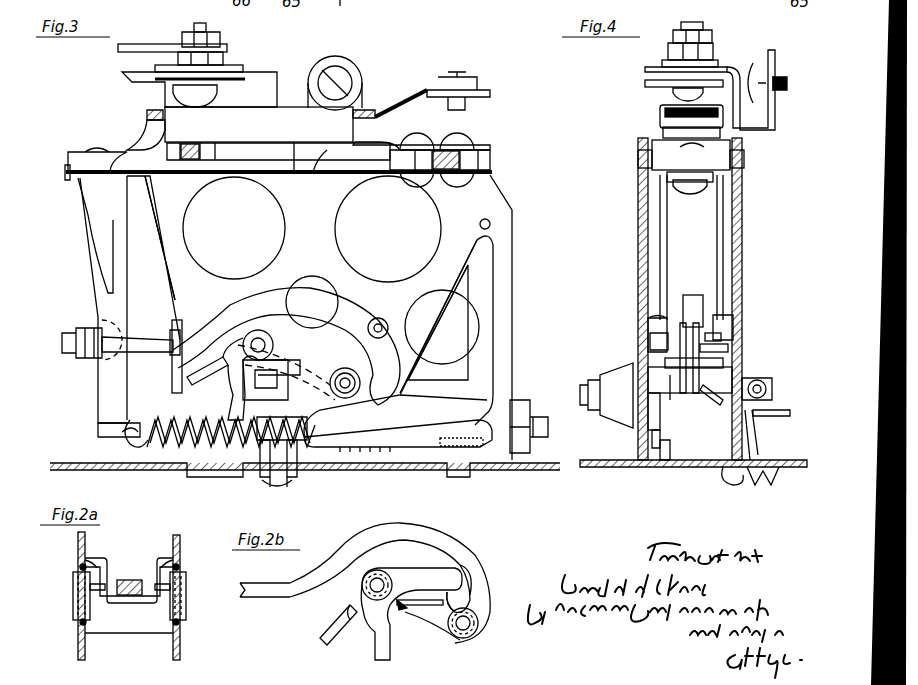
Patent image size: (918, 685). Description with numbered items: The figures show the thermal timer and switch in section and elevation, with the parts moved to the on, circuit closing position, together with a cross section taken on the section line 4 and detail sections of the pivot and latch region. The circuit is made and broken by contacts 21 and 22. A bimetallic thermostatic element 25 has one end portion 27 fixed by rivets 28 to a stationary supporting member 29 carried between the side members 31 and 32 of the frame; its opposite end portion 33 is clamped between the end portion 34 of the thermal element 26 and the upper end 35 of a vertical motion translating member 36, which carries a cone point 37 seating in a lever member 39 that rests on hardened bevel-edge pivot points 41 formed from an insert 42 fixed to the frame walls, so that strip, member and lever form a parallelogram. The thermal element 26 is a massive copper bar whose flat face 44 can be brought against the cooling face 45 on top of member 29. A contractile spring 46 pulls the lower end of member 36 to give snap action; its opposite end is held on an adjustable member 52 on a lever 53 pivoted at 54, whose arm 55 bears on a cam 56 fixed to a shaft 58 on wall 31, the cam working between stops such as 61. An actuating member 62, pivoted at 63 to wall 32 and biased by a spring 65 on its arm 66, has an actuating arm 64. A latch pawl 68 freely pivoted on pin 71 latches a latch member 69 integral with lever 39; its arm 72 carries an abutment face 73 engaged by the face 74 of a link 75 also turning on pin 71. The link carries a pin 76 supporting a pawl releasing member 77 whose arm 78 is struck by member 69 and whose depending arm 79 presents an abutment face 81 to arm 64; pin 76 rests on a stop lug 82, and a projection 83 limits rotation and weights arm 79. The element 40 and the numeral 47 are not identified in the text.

In FIG. 3, the section line 4- 4 is at (500, 140).
In FIG. 3, the make-and-break contact 21 is at (175, 100).
In FIG. 4, the make-and-break contact 21 is at (678, 94).
In FIG. 3, the make-and-break contact 22 is at (180, 100).
In FIG. 4, the make-and-break contact 22 is at (678, 97).
In FIG. 3, the thermostatic element 25 is at (232, 178).
In FIG. 3, the thermal element 26 is at (148, 130).
In FIG. 4, the thermal element 26 is at (662, 126).
In FIG. 3, the end portion of thermostatic strip 27 is at (492, 163).
In FIG. 4, the end portion of thermostatic strip 27 is at (675, 178).
In FIG. 4, the rivets 28 is at (700, 188).
In FIG. 3, the stationary supporting member 29 is at (490, 152).
In FIG. 4, the stationary supporting member 29 is at (716, 159).
In FIG. 4, the side member of frame 31 is at (638, 209).
In FIG. 2A, the side member of frame 31 is at (80, 635).
In FIG. 3, the side member of frame 32 is at (488, 200).
In FIG. 2A, the side member of frame 32 is at (178, 558).
In FIG. 3, the end portion of thermostatic strip 33 is at (75, 180).
In FIG. 3, the end portion of thermal element 34 is at (70, 154).
In FIG. 3, the upper end of motion translating member 35 is at (80, 188).
In FIG. 3, the vertical motion translating member 36 is at (90, 250).
In FIG. 3, the cone point 37 is at (95, 375).
In FIG. 3, the lever member 39 is at (143, 355).
In FIG. 2B, the lever member 39 is at (270, 585).
In FIG. 3, the terminal block 40 is at (327, 99).
In FIG. 4, the terminal block 40 is at (662, 113).
In FIG. 3, the stationary pivot points 41 is at (172, 340).
In FIG. 2A, the stationary pivot points 41 is at (90, 594).
In FIG. 3, the insert 42 is at (172, 375).
In FIG. 4, the insert 42 is at (662, 325).
In FIG. 2A, the insert 42 is at (78, 560).
In FIG. 3, the flat face of thermal element 44 is at (294, 143).
In FIG. 3, the flat face of supporting member 45 is at (327, 150).
In FIG. 3, the contractile spring 46 is at (175, 450).
In FIG. 3, the spring anchor 47 is at (112, 437).
In FIG. 3, the adjustable member 52 is at (528, 405).
In FIG. 3, the lever 53 is at (500, 330).
In FIG. 3, the pivot 54 is at (492, 224).
In FIG. 3, the lever arm 55 is at (330, 445).
In FIG. 4, the lever arm 55 is at (652, 462).
In FIG. 4, the adjustable cam 56 is at (648, 420).
In FIG. 4, the shaft 58 is at (590, 390).
In FIG. 4, the stop 61 is at (658, 340).
In FIG. 4, the actuating member 62 is at (765, 410).
In FIG. 4, the pivot 63 is at (770, 374).
In FIG. 3, the actuating arm 64 is at (268, 465).
In FIG. 4, the contractile spring 65 is at (757, 480).
In FIG. 3, the arm 66 is at (292, 480).
In FIG. 4, the arm 66 is at (742, 432).
In FIG. 3, the latch pawl 68 is at (380, 318).
In FIG. 4, the latch pawl 68 is at (722, 322).
In FIG. 2B, the latch pawl 68 is at (490, 595).
In FIG. 3, the latch member 69 is at (268, 312).
In FIG. 4, the latch member 69 is at (694, 298).
In FIG. 2A, the latch member 69 is at (122, 580).
In FIG. 2B, the latch member 69 is at (445, 545).
In FIG. 3, the supporting pin 71 is at (362, 388).
In FIG. 4, the supporting pin 71 is at (650, 380).
In FIG. 2B, the supporting pin 71 is at (460, 633).
In FIG. 2B, the arm of pawl 72 is at (440, 620).
In FIG. 2B, the abutment face 73 is at (425, 598).
In FIG. 2B, the abutment face 74 is at (400, 612).
In FIG. 4, the link 75 is at (676, 385).
In FIG. 4, the pin 76 is at (715, 338).
In FIG. 2B, the pawl releasing member 77 is at (400, 575).
In FIG. 4, the arm 78 is at (690, 356).
In FIG. 2B, the arm 78 is at (470, 568).
In FIG. 3, the depending arm 79 is at (222, 380).
In FIG. 2B, the depending arm 79 is at (362, 625).
In FIG. 3, the abutment face 81 is at (228, 395).
In FIG. 2B, the abutment face 81 is at (385, 640).
In FIG. 4, the stop lug 82 is at (728, 348).
In FIG. 4, the projection 83 is at (725, 365).
In FIG. 2B, the projection 83 is at (328, 630).